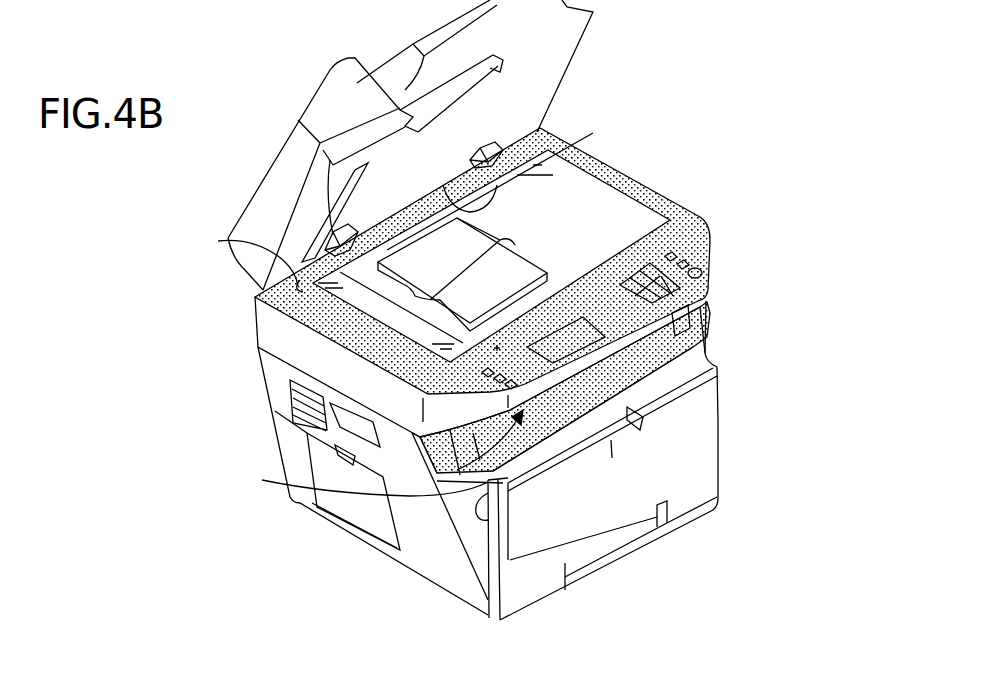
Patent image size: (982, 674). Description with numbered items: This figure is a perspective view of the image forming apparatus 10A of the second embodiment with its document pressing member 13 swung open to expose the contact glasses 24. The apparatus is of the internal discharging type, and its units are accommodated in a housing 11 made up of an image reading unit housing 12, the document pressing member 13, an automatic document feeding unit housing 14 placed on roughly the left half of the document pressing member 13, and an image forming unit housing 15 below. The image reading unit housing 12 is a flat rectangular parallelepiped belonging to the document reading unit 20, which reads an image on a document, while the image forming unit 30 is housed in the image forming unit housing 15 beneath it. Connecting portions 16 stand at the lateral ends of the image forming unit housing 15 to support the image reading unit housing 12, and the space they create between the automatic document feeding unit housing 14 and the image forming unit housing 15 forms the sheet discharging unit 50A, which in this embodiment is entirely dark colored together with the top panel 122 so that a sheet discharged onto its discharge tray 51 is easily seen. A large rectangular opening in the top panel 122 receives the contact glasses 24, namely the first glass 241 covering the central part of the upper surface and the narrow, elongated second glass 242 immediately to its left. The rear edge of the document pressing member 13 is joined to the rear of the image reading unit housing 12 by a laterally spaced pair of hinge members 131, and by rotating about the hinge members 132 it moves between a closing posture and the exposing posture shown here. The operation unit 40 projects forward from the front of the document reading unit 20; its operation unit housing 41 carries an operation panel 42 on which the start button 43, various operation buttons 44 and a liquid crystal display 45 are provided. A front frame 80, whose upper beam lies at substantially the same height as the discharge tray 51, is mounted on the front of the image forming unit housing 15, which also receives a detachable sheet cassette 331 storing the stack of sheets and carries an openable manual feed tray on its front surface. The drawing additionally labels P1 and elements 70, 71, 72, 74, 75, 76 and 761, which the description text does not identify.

The image forming apparatus 10A is at (216, 98).
The housing 11 is at (850, 105).
The image reading unit housing 12 is at (665, 208).
The document pressing member 13 is at (600, 0).
The automatic document feeding unit housing 14 is at (677, 0).
The image forming unit housing 15 is at (718, 372).
The connecting portions 16 is at (712, 320).
The document reading unit 20 is at (240, 288).
The contact glasses 24 is at (680, 112).
The placed document glass (first glass) 241 is at (540, 202).
The automatically fed document glass (second glass) 242 is at (600, 220).
The image forming unit 30 is at (253, 384).
The operation unit 40 is at (420, 357).
The operation unit housing 41 is at (712, 490).
The operation panel 42 is at (655, 425).
The start button 43 is at (703, 270).
The operation buttons 44 is at (680, 252).
The display 45 is at (692, 372).
The sheet discharging unit 50A is at (262, 480).
The discharge tray 51 is at (573, 430).
The side cover 70 is at (345, 587).
The cover panel 71 is at (443, 563).
The opening 72 is at (377, 528).
The side wall 74 is at (290, 377).
The vent window 75 is at (347, 423).
The support member 76 is at (478, 560).
The grip 761 is at (484, 498).
The front frame 80 is at (640, 470).
The top panel 122 is at (303, 286).
The hinge members 131 is at (362, 242).
The hinge members 132 is at (468, 157).
The sheet cassette 331 is at (627, 518).
The document P1 is at (513, 262).